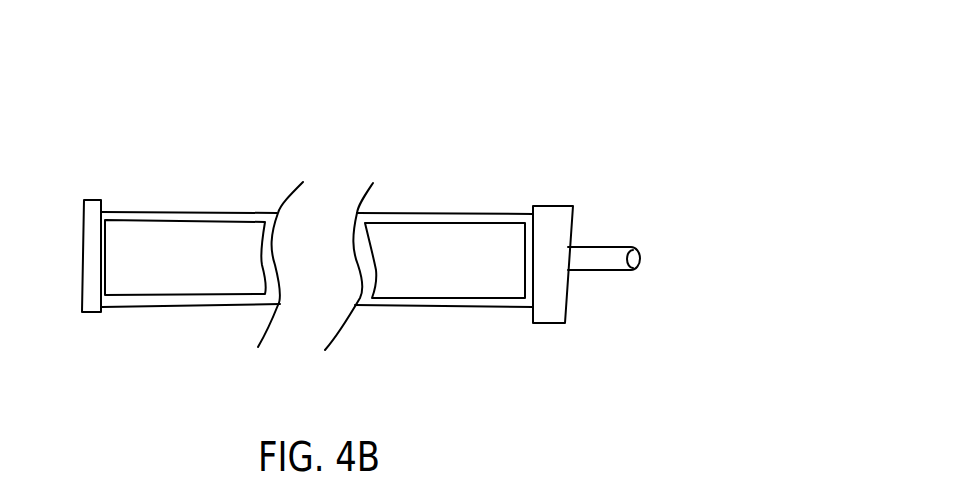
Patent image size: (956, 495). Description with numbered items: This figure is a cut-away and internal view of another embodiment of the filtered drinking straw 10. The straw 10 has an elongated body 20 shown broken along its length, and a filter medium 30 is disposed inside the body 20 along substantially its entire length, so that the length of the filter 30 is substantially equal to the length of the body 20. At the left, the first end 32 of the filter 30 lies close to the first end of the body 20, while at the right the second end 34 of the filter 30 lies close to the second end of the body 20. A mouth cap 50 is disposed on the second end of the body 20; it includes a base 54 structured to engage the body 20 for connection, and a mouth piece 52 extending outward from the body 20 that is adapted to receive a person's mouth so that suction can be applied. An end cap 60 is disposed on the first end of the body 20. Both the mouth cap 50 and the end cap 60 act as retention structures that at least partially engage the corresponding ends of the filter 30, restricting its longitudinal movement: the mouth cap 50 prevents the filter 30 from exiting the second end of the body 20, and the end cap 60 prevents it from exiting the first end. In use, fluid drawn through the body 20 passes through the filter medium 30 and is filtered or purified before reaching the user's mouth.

The filtered drinking straw 10 is at (545, 137).
The body 20 is at (422, 308).
The filter medium 30 is at (196, 267).
The first end of the filter 32 is at (107, 243).
The second end of the filter 34 is at (523, 263).
The mouth cap 50 is at (617, 198).
The mouth piece 52 is at (610, 270).
The base 54 is at (567, 302).
The end cap 60 is at (93, 313).